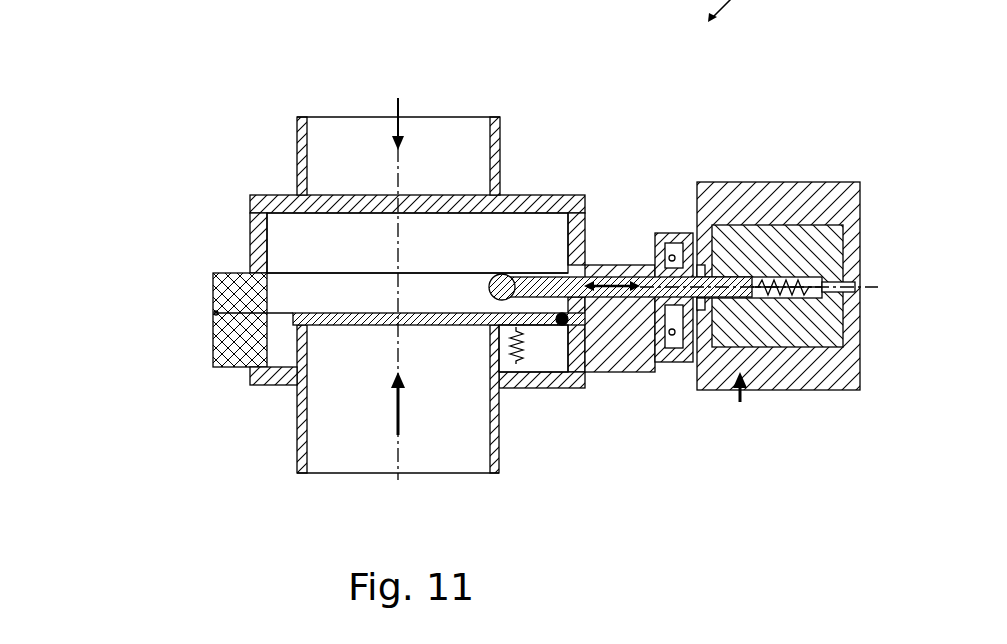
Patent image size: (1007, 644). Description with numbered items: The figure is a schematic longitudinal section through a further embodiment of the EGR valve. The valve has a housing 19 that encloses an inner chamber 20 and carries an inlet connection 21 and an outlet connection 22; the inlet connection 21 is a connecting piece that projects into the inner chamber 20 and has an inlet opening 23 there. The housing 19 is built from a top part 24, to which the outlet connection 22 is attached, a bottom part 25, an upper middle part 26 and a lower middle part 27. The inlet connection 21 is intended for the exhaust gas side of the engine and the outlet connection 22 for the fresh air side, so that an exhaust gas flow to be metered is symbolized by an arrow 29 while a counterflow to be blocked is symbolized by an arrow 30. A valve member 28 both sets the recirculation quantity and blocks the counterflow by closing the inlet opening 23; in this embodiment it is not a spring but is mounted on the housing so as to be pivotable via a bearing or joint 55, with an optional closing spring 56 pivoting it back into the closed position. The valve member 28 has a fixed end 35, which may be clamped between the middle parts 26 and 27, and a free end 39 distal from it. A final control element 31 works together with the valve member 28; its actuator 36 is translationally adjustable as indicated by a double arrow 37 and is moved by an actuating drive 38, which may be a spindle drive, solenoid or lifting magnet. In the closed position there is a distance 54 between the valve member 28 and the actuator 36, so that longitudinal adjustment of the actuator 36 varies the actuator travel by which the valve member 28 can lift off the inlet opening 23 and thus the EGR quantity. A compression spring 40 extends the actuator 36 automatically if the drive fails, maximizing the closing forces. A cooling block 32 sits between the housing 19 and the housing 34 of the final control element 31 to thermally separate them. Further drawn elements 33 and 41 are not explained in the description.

The housing 19 is at (620, 272).
The inner chamber 20 is at (377, 249).
The inlet connection 21 is at (500, 440).
The outlet connection 22 is at (500, 145).
The inlet opening 23 is at (315, 326).
The top part 24 is at (548, 205).
The bottom part 25 is at (272, 380).
The upper middle part 26 is at (232, 290).
The lower middle part 27 is at (629, 372).
The valve member 28 is at (343, 316).
The arrow 29 is at (398, 437).
The arrow 30 is at (398, 118).
The final control element 31 is at (730, 420).
The cooling block 32 is at (668, 234).
The sensor 33 is at (673, 336).
The housing of the final control element 34 is at (780, 195).
The fixed end 35 is at (590, 370).
The actuator 36 is at (527, 286).
The double arrow 37 is at (607, 280).
The actuating drive 38 is at (798, 240).
The free end 39 is at (292, 312).
The compression spring 40 is at (818, 300).
The spring 41 is at (505, 345).
The distance 54 is at (500, 306).
The bearing or joint 55 is at (562, 326).
The closing spring 56 is at (532, 372).